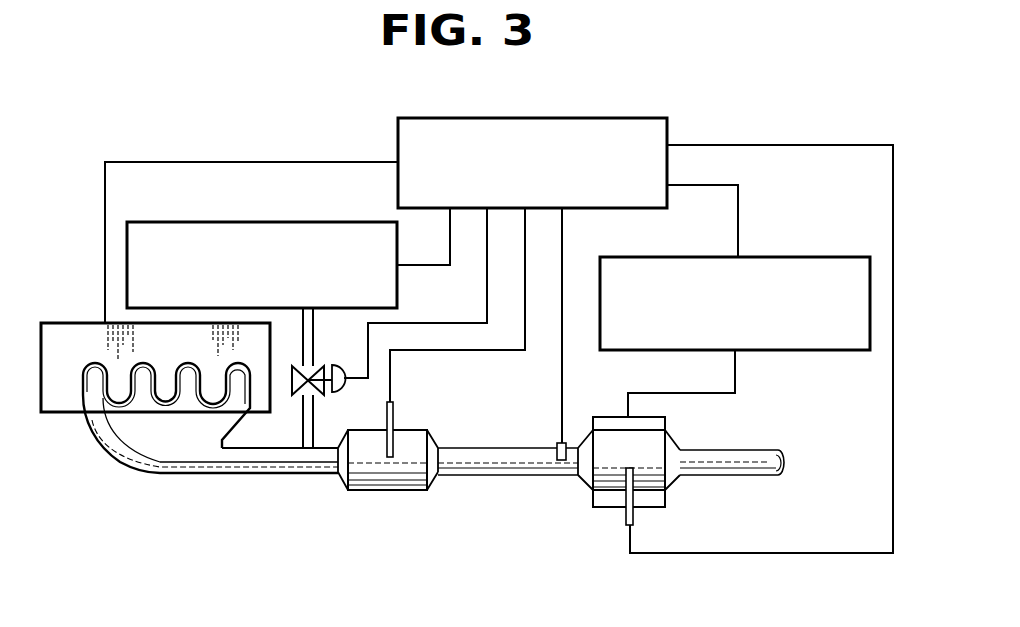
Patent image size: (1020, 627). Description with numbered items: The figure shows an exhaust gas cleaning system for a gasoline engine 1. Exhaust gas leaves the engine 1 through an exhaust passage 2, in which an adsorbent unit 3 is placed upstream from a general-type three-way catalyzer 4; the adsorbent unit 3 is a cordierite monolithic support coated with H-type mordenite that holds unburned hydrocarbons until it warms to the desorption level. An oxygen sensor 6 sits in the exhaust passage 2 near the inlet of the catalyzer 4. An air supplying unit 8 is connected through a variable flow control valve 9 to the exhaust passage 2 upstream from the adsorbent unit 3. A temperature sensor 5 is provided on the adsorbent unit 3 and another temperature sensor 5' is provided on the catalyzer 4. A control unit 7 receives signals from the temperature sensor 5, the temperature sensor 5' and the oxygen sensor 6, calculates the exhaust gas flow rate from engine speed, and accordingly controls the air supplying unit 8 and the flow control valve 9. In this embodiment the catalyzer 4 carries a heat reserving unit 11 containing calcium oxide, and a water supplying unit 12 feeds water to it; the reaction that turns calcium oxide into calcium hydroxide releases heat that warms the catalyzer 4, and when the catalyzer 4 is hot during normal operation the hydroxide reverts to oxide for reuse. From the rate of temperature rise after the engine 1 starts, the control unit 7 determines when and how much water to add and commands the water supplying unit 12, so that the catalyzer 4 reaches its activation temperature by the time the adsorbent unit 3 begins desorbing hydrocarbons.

The gasoline engine 1 is at (63, 399).
The exhaust passage 2 is at (257, 460).
The adsorbent unit 3 is at (375, 480).
The three-way catalyzer 4 is at (580, 478).
The temperature sensor 5 is at (456, 332).
The temperature sensor 5' is at (759, 349).
The oxygen sensor 6 is at (558, 443).
The control unit 7 is at (578, 118).
The air supplying unit 8 is at (280, 222).
The variable flow control valve 9 is at (292, 384).
The heat reserving unit 11 is at (650, 417).
The water supplying unit 12 is at (770, 257).